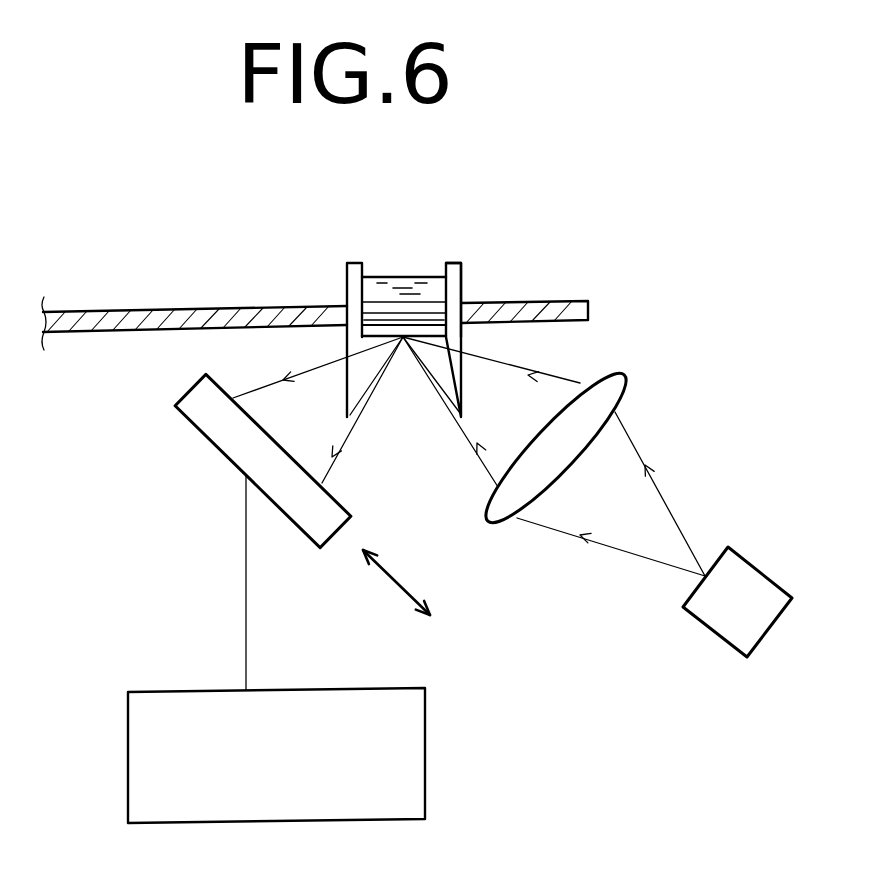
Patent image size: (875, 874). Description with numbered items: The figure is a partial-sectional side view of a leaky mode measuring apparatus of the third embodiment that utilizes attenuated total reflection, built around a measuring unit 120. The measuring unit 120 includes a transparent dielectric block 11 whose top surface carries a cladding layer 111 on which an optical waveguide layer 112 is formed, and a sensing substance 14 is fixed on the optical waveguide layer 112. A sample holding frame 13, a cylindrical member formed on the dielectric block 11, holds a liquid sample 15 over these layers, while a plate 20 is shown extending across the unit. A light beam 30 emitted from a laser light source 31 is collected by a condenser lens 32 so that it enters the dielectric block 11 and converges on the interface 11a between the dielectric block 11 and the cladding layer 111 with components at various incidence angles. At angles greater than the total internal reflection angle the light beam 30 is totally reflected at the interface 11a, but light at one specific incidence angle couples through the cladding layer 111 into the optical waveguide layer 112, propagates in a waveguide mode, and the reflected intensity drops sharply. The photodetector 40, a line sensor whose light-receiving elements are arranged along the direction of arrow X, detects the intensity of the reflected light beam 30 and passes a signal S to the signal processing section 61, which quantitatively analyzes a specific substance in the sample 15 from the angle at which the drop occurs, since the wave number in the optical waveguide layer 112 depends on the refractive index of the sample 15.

The dielectric block 11 is at (448, 373).
The interface 11a is at (383, 335).
The sample holding frame 13 is at (458, 270).
The sensing substance 14 is at (422, 307).
The sample 15 is at (397, 280).
The substrate plate 20 is at (140, 312).
The light beam 30 is at (654, 508).
The laser light source 31 is at (760, 588).
The condenser lens 32 is at (615, 393).
The photodetector 40 is at (218, 445).
The signal processing section 61 is at (425, 732).
The cladding layer 111 is at (462, 318).
The optical waveguide layer 112 is at (450, 307).
The measuring unit 120 is at (440, 235).
The detection signal S is at (246, 617).
The direction of arrow X is at (397, 583).